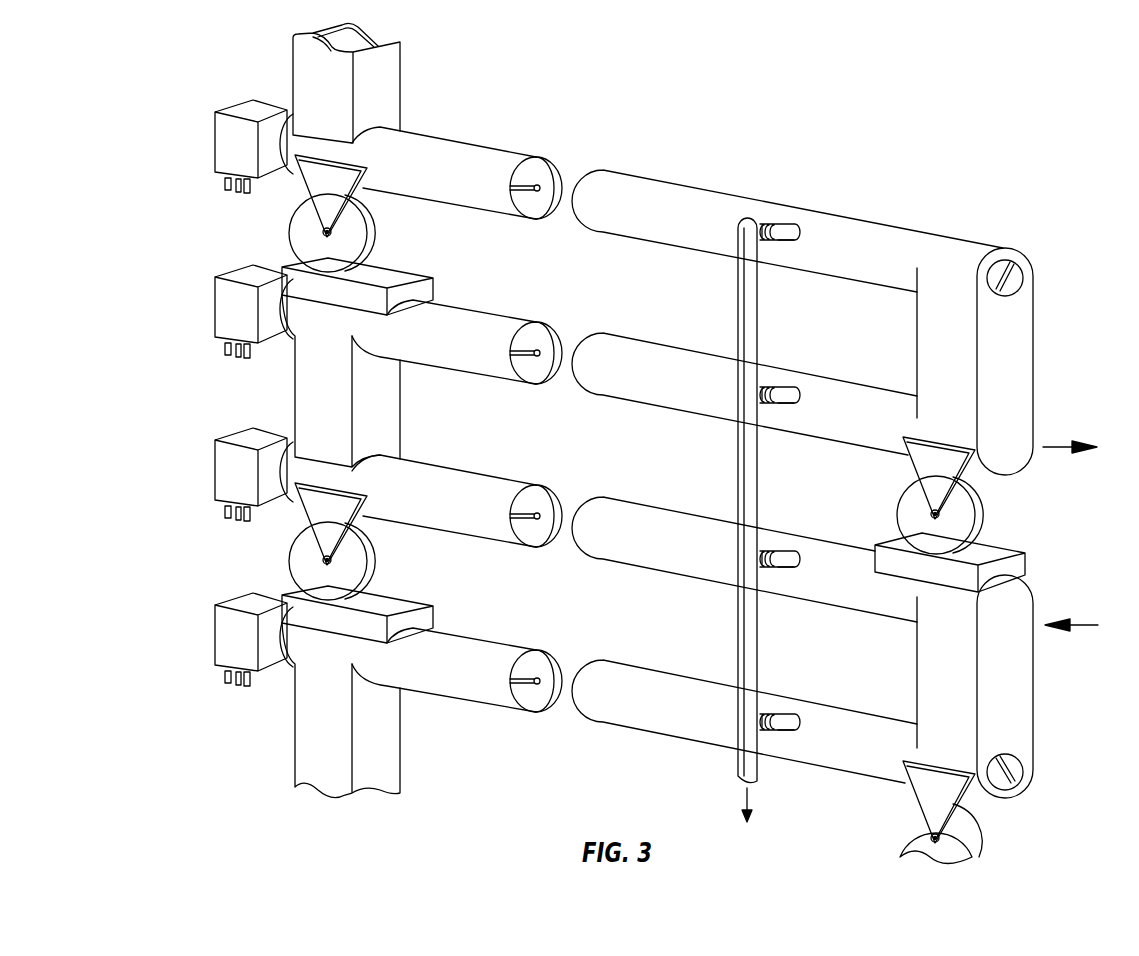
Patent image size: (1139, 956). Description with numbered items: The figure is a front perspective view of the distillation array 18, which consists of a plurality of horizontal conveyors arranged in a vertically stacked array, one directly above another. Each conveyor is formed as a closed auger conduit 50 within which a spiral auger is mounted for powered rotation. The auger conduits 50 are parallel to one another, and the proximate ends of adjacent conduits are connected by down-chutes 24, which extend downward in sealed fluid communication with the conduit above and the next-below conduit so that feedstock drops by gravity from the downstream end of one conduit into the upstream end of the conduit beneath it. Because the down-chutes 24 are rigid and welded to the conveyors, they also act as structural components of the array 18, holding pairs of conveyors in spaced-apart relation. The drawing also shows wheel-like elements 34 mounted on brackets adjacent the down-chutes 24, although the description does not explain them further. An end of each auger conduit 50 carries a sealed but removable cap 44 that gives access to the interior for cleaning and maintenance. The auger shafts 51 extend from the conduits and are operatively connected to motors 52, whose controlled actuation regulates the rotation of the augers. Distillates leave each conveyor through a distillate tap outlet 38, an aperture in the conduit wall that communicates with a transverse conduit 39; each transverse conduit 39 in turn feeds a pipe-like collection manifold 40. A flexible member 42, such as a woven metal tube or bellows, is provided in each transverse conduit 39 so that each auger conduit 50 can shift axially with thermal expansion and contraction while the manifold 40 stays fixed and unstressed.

The distillation array 18 is at (964, 165).
The down-chute 24 is at (388, 395).
The roller 34 is at (297, 232).
The distillate tap outlet 38 is at (797, 235).
The transverse conduit 39 is at (782, 240).
The collection manifold 40 is at (743, 482).
The flexible member 42 is at (772, 227).
The removable cap 44 is at (1022, 280).
The auger conduit 50 is at (467, 193).
The auger shaft 51 is at (538, 197).
The motor 52 is at (220, 143).